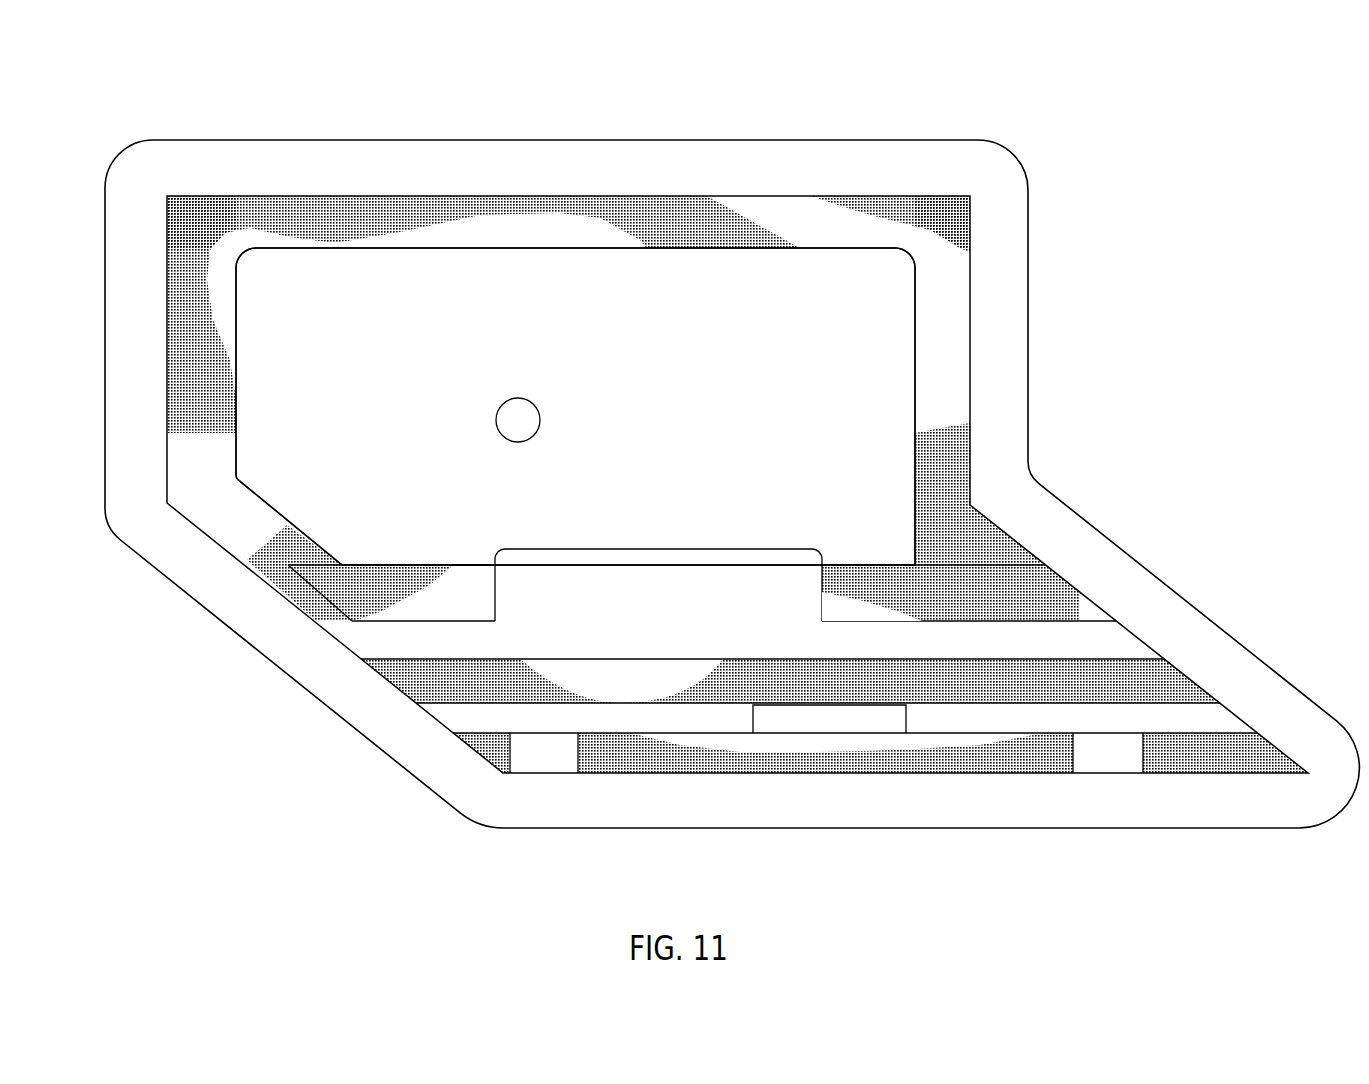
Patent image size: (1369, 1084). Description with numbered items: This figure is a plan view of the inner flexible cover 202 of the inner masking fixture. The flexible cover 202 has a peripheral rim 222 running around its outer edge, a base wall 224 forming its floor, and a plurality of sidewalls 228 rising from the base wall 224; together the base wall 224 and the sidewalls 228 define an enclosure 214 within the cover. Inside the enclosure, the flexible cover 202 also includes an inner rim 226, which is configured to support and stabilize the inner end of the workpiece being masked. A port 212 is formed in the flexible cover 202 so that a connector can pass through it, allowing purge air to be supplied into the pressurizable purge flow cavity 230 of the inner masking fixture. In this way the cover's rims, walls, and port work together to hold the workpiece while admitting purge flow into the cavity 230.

The flexible cover 202 is at (148, 108).
The port 212 is at (523, 420).
The enclosure 214 is at (537, 745).
The peripheral rim 222 is at (998, 247).
The base wall 224 is at (733, 381).
The inner rim 226 is at (855, 238).
The sidewalls 228 is at (913, 388).
The purge flow cavity 230 is at (633, 327).